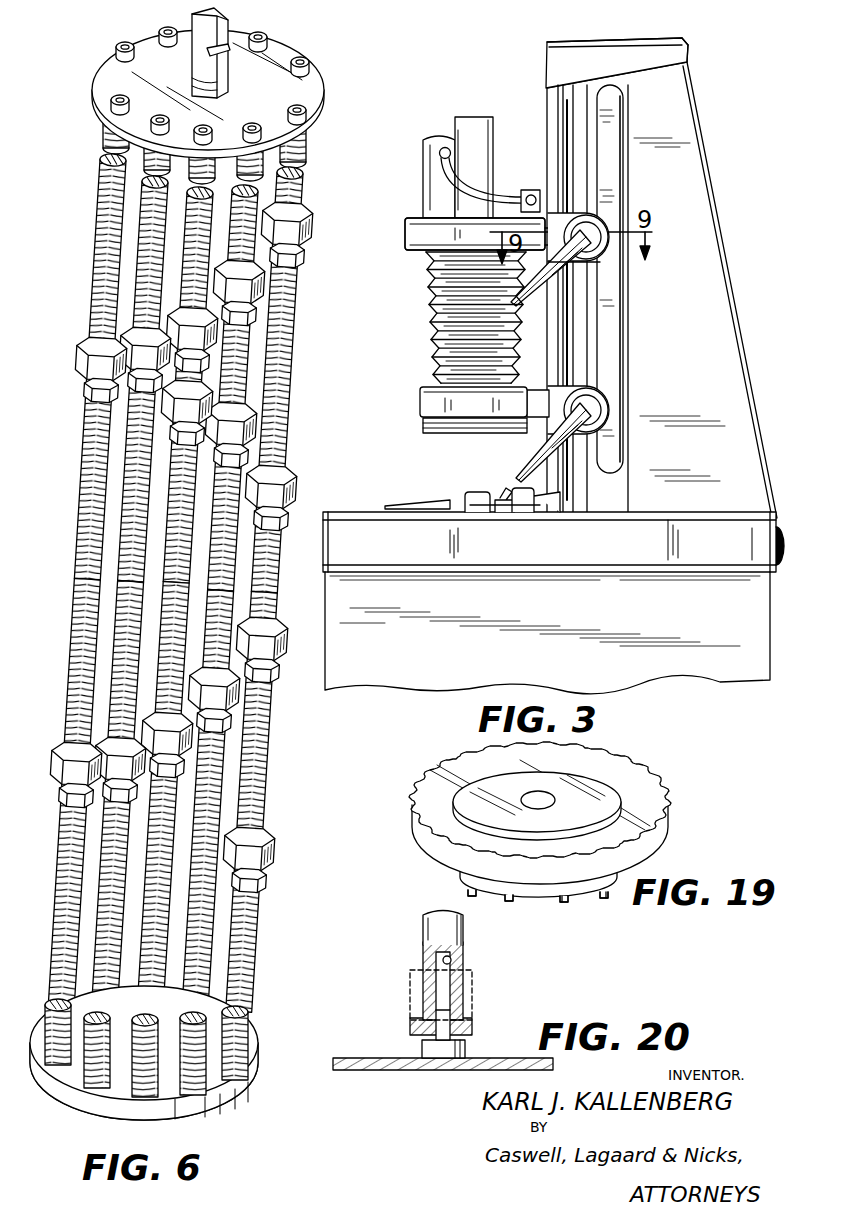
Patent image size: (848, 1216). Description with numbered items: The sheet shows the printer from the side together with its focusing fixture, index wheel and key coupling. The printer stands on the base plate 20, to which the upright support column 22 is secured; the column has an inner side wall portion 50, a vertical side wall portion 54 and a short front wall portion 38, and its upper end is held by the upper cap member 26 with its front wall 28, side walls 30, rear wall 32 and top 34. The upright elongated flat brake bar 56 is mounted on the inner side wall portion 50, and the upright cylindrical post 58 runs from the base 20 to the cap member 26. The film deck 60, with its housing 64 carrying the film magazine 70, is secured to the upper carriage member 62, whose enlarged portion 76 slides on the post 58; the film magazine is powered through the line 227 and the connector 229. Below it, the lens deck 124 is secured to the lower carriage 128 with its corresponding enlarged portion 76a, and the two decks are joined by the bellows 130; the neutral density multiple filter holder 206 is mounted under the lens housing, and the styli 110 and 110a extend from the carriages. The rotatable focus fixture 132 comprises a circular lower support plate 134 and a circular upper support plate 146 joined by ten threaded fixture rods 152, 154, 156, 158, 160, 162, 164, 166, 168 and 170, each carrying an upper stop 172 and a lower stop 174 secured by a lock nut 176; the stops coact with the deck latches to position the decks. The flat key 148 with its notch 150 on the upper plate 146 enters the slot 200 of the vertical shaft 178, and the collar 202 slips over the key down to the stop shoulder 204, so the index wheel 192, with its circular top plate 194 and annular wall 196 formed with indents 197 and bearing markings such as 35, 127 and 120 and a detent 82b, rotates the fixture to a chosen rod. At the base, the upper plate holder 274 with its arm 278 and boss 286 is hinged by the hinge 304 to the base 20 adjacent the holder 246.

In FIG. 3, the base plate 20 is at (686, 513).
In FIG. 3, the upright support column 22 is at (694, 97).
In FIG. 3, the upper cap member 26 is at (684, 40).
In FIG. 3, the front wall 28 is at (548, 74).
In FIG. 3, the side walls 30 is at (618, 52).
In FIG. 3, the rear wall 32 is at (690, 48).
In FIG. 3, the top 34 is at (560, 42).
In FIG. 3, the short front wall portion 38 is at (552, 118).
In FIG. 3, the inner side wall portion 50 is at (618, 92).
In FIG. 3, the vertical side wall portion 54 is at (702, 383).
In FIG. 3, the brake bar 56 is at (614, 328).
In FIG. 3, the cylindrical post 58 is at (570, 355).
In FIG. 3, the film deck 60 is at (413, 216).
In FIG. 3, the upper carriage member 62 is at (562, 267).
In FIG. 3, the housing 64 is at (405, 238).
In FIG. 3, the film magazine 70 is at (457, 127).
In FIG. 3, the enlarged portion 76 is at (562, 214).
In FIG. 3, the enlarged portion of lower carriage 76a is at (570, 385).
In FIG. 3, the upper stylus 110 is at (551, 280).
In FIG. 3, the lower stylus 110a is at (530, 460).
In FIG. 3, the lens deck 124 is at (419, 400).
In FIG. 3, the lower carriage 128 is at (532, 388).
In FIG. 3, the bellows 130 is at (427, 312).
In FIG. 6, the rotatable focus fixture 132 is at (278, 760).
In FIG. 20, the rotatable focus fixture 132 is at (376, 1055).
In FIG. 6, the circular lower support plate 134 is at (255, 1080).
In FIG. 6, the circular upper support plate 146 is at (312, 86).
In FIG. 20, the circular upper support plate 146 is at (343, 1057).
In FIG. 6, the flat key 148 is at (222, 22).
In FIG. 20, the flat key 148 is at (452, 992).
In FIG. 6, the notch 150 is at (228, 52).
In FIG. 20, the notch 150 is at (447, 1012).
In FIG. 6, the fixture rod 152 is at (277, 379).
In FIG. 6, the fixture rod 154 is at (232, 387).
In FIG. 6, the fixture rod 156 is at (188, 384).
In FIG. 6, the fixture rod 158 is at (142, 378).
In FIG. 6, the fixture rod 160 is at (100, 366).
In FIG. 6, the fixture rod 162 is at (74, 793).
In FIG. 6, the fixture rod 164 is at (118, 789).
In FIG. 6, the fixture rod 166 is at (164, 788).
In FIG. 6, the fixture rod 168 is at (208, 797).
In FIG. 6, the fixture rod 170 is at (251, 801).
In FIG. 6, the upper stop 172 is at (306, 224).
In FIG. 6, the lower stop 174 is at (278, 636).
In FIG. 6, the lock nut 176 is at (302, 258).
In FIG. 20, the vertical shaft 178 is at (464, 922).
In FIG. 19, the index wheel 192 is at (670, 812).
In FIG. 19, the circular top plate 194 is at (658, 788).
In FIG. 19, the annular wall 196 is at (550, 900).
In FIG. 19, the indents 197 is at (606, 898).
In FIG. 20, the slot 200 is at (452, 972).
In FIG. 20, the collar 202 is at (474, 1012).
In FIG. 20, the stop shoulder 204 is at (472, 1030).
In FIG. 3, the neutral density multiple filter holder 206 is at (422, 430).
In FIG. 3, the line 227 is at (472, 190).
In FIG. 3, the connector 229 is at (530, 195).
In FIG. 3, the holder 246 is at (452, 497).
In FIG. 3, the upper plate holder 274 is at (498, 498).
In FIG. 3, the arm 278 is at (507, 512).
In FIG. 3, the boss 286 is at (470, 492).
In FIG. 3, the hinge 304 is at (541, 512).
In FIG. 19, the detent 82b is at (479, 884).
In FIG. 19, the index marking 127 is at (518, 888).
In FIG. 19, the index marking 35 is at (561, 888).
In FIG. 19, the index marking 120 is at (600, 884).